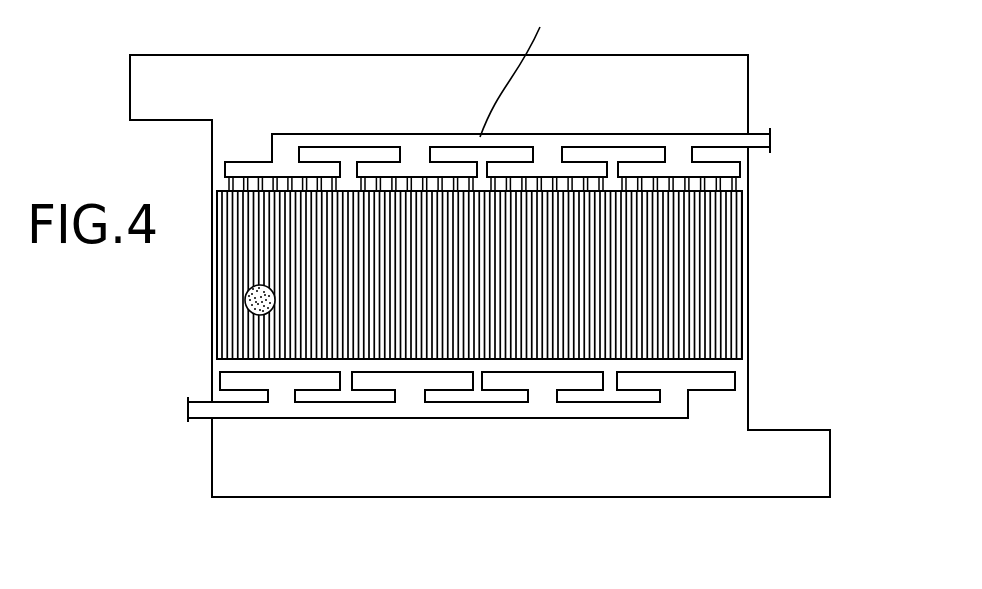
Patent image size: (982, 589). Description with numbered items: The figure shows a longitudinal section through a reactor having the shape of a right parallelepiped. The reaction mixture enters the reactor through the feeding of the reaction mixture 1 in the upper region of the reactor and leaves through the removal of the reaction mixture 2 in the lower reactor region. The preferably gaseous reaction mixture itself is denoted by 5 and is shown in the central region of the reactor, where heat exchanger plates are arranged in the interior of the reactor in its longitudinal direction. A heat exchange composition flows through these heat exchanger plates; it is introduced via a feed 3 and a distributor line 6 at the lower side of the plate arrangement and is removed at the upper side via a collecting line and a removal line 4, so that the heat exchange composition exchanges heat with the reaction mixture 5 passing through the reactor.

The feeding of the reaction mixture 1 is at (112, 89).
The removal of the reaction mixture 2 is at (833, 463).
The feed 3 is at (176, 412).
The removal line 4 is at (772, 141).
The reaction mixture 5 is at (245, 299).
The distributor line 6 is at (493, 410).